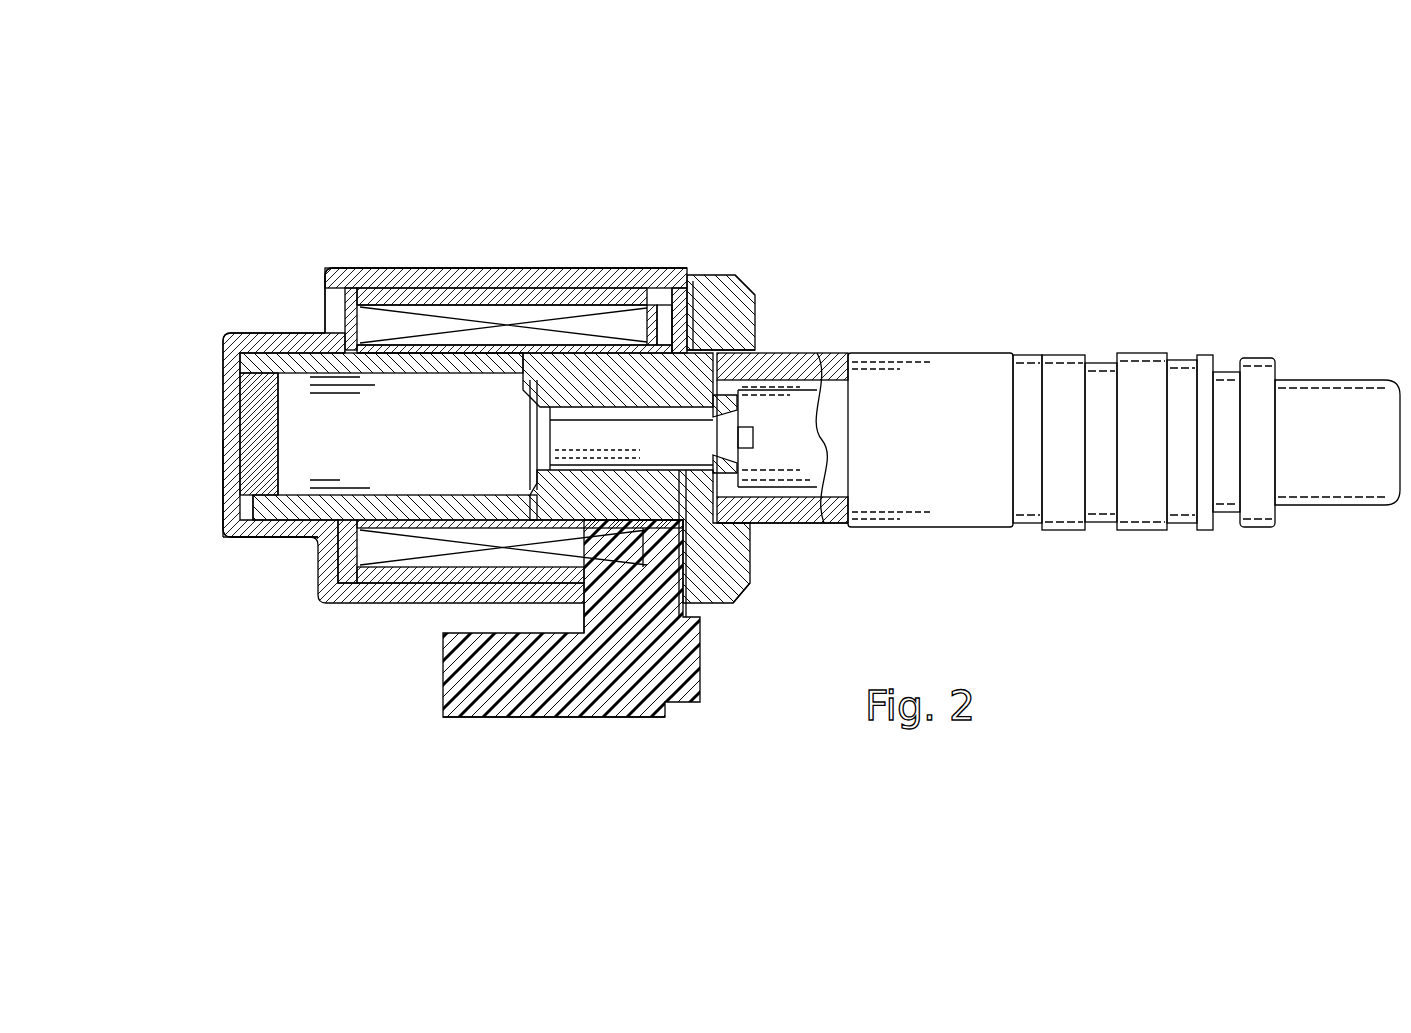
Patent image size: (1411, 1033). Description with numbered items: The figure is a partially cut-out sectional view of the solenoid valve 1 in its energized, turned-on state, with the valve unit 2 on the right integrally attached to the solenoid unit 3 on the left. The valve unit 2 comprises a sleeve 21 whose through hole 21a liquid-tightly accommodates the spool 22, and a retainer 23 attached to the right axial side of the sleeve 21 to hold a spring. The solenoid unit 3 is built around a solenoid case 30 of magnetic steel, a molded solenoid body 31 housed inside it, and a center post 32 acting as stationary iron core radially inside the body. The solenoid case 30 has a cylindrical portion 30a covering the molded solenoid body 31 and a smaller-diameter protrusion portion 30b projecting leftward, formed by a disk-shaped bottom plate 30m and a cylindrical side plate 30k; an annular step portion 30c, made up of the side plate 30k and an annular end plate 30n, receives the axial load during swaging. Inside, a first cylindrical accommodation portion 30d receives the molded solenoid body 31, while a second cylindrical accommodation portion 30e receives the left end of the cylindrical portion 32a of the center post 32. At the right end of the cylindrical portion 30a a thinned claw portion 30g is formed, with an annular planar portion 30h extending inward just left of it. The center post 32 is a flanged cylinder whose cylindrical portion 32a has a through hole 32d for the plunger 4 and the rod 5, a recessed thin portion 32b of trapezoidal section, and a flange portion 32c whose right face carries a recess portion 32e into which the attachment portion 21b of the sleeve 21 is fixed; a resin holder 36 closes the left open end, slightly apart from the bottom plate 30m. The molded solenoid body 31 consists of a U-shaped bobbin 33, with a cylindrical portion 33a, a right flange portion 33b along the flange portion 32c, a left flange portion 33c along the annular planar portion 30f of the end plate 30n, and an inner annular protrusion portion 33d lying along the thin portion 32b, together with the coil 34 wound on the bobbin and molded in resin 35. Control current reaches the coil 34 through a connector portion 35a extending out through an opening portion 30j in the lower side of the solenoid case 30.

The solenoid valve 1 is at (1018, 208).
The valve unit 2 is at (1027, 340).
The solenoid unit 3 is at (318, 192).
The plunger 4 is at (230, 428).
The rod 5 is at (713, 597).
The sleeve 21 is at (832, 348).
The through hole 21a is at (815, 405).
The attachment portion 21b is at (757, 541).
The spool 22 is at (873, 530).
The retainer 23 is at (1322, 380).
The solenoid case 30 is at (352, 262).
The cylindrical portion 30a is at (356, 290).
The protrusion portion 30b is at (122, 610).
The annular step portion 30c is at (233, 722).
The first cylindrical accommodation portion 30d is at (463, 383).
The second cylindrical accommodation portion 30e is at (222, 372).
The annular planar portion 30f is at (327, 290).
The claw portion 30g is at (751, 283).
The annular planar portion 30h is at (708, 296).
The opening portion 30j is at (590, 603).
The side plate 30k is at (240, 513).
The bottom plate 30m is at (213, 530).
The end plate 30n is at (300, 542).
The molded solenoid body 31 is at (705, 665).
The center post 32 is at (757, 318).
The cylindrical portion 32a is at (250, 500).
The thin portion 32b is at (470, 565).
The flange portion 32c is at (722, 290).
The through hole 32d is at (398, 590).
The recess portion 32e is at (744, 590).
The bobbin 33 is at (312, 340).
The cylindrical portion 33a is at (517, 300).
The flange portion 33b is at (663, 340).
The flange portion 33c is at (323, 318).
The annular protrusion portion 33d is at (478, 320).
The coil 34 is at (590, 295).
The resin 35 is at (650, 345).
The connector portion 35a is at (524, 700).
The holder 36 is at (240, 465).